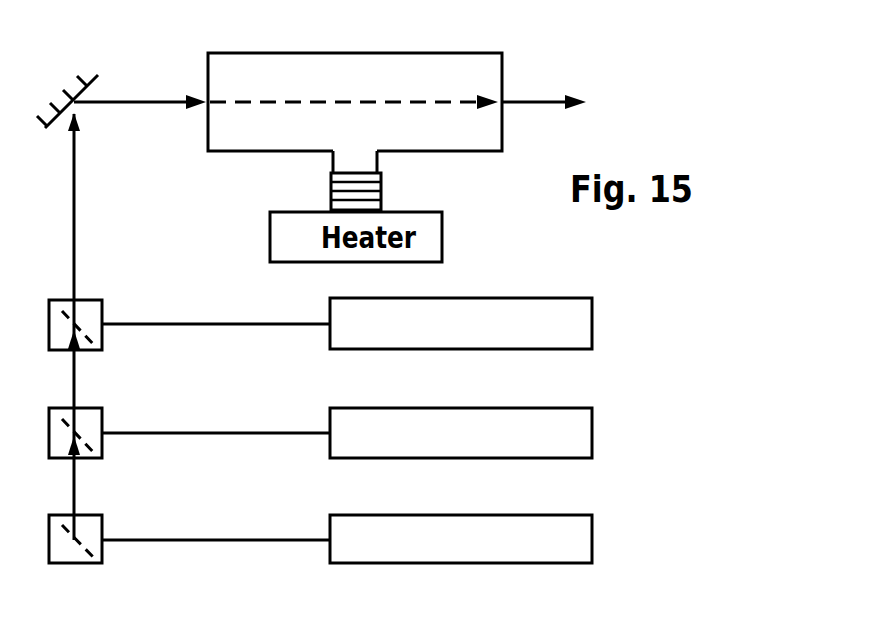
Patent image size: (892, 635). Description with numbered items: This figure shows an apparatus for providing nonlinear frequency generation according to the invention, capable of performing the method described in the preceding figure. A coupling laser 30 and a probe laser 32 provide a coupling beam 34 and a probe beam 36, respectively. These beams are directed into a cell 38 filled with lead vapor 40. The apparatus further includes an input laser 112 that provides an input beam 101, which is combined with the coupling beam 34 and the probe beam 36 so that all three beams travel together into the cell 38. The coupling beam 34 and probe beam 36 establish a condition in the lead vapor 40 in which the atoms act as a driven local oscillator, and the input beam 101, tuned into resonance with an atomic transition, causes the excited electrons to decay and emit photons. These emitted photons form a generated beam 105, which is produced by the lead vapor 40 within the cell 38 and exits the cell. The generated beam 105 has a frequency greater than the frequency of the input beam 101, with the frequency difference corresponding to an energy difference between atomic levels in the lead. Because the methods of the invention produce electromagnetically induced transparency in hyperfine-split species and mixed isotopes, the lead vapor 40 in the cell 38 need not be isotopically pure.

The coupling laser 30 is at (493, 298).
The probe laser 32 is at (494, 408).
The coupling beam 34 is at (168, 326).
The probe beam 36 is at (168, 435).
The cell 38 is at (328, 52).
The lead vapor 40 is at (465, 142).
The input beam 101 is at (168, 541).
The generated beam 105 is at (540, 98).
The input laser 112 is at (593, 542).